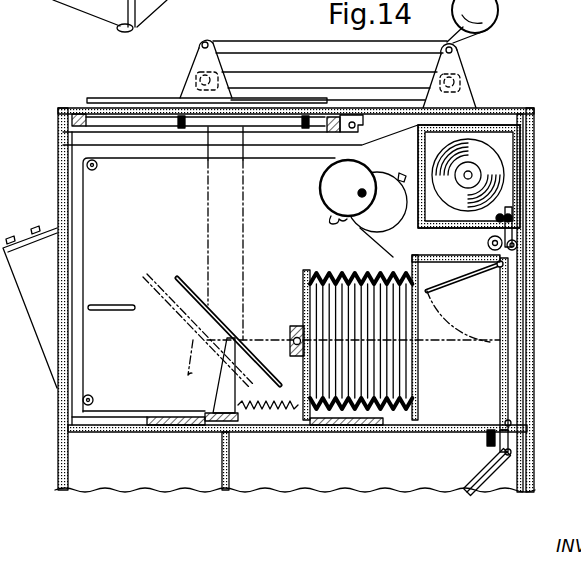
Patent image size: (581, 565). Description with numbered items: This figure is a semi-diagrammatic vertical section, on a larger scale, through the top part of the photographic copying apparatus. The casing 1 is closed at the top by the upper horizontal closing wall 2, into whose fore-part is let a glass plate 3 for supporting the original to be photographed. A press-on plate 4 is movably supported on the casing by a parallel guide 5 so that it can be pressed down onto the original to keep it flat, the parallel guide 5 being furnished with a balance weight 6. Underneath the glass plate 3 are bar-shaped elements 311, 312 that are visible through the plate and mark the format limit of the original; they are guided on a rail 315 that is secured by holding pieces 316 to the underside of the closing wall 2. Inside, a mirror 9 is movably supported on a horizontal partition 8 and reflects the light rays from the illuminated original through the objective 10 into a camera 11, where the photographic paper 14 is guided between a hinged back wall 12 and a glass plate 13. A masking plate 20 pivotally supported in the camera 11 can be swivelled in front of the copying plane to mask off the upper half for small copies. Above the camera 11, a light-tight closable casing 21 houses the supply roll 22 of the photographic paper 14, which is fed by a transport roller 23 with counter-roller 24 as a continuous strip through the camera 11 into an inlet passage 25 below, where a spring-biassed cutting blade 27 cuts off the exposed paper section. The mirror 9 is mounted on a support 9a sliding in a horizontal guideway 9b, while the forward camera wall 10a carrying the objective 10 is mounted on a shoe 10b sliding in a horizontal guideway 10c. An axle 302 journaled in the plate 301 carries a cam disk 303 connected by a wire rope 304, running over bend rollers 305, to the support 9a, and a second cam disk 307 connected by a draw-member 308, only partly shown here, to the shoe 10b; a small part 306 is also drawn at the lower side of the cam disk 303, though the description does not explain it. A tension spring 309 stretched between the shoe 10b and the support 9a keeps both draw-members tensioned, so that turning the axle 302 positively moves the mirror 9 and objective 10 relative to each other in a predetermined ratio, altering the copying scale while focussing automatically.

The casing 1 is at (60, 153).
The upper horizontal closing wall 2 is at (500, 112).
The glass plate 3 is at (112, 104).
The press-on plate 4 is at (153, 101).
The parallel guide 5 is at (270, 48).
The balance weight 6 is at (482, 28).
The horizontal partition 8 is at (105, 433).
The mirror 9 is at (186, 275).
The support 9a is at (213, 394).
The horizontal guideway 9b is at (165, 432).
The objective 10 is at (290, 332).
The forward camera wall 10a is at (303, 276).
The shoe 10b is at (310, 432).
The horizontal guideway 10c is at (355, 432).
The camera 11 is at (420, 432).
The hinged back wall 12 is at (524, 382).
The glass plate 13 is at (500, 360).
The photographic paper 14 is at (507, 204).
The masking plate 20 is at (452, 284).
The light-tight closable casing 21 is at (508, 125).
The supply roll 22 is at (497, 163).
The transport roller 23 is at (488, 243).
The counter-roller 24 is at (524, 259).
The inlet passage 25 is at (488, 466).
The cutting blade 27 is at (530, 447).
The plate 301 is at (58, 187).
The axle 302 is at (362, 193).
The cam disk 303 is at (321, 190).
The wire rope 304 is at (190, 160).
The bend rollers 305 is at (94, 170).
The stop 306 is at (332, 222).
The second cam disk 307 is at (398, 174).
The draw-member 308 is at (372, 243).
The tension spring 309 is at (260, 432).
The bar 311 is at (304, 127).
The bar 312 is at (182, 127).
The rail 315 is at (153, 125).
The holding pieces 316 is at (354, 114).